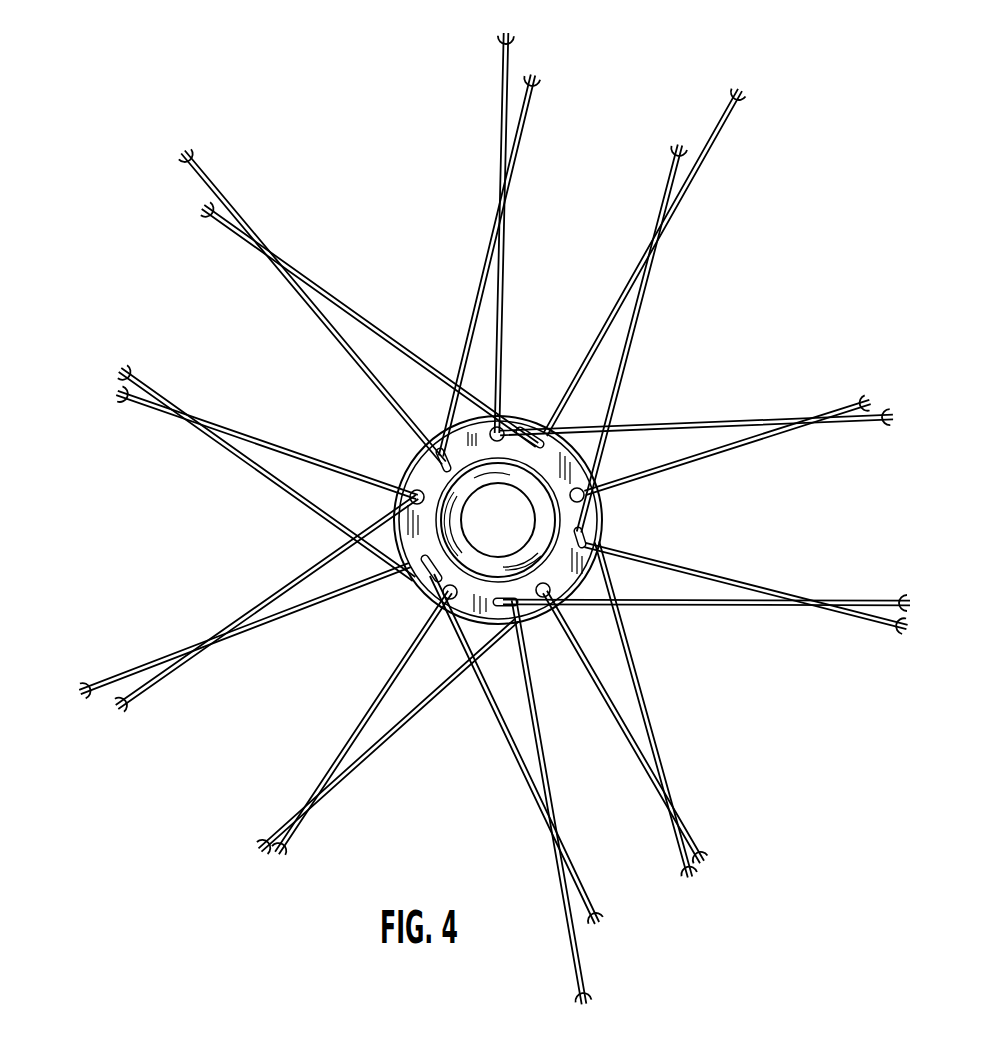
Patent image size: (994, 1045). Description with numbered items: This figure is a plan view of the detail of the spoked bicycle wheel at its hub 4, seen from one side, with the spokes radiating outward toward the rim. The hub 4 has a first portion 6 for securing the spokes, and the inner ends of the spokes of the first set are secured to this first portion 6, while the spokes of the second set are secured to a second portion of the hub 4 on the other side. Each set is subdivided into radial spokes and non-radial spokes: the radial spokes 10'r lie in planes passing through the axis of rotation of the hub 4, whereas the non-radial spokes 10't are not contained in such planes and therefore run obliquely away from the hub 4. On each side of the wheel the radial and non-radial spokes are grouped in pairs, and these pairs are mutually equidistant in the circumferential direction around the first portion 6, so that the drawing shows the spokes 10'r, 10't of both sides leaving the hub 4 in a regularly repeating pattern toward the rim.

The hub 4 is at (378, 418).
The first portion 6 is at (523, 440).
The radial spokes of the first set 10'r is at (505, 455).
The non-radial spokes of the first set 10't is at (422, 534).